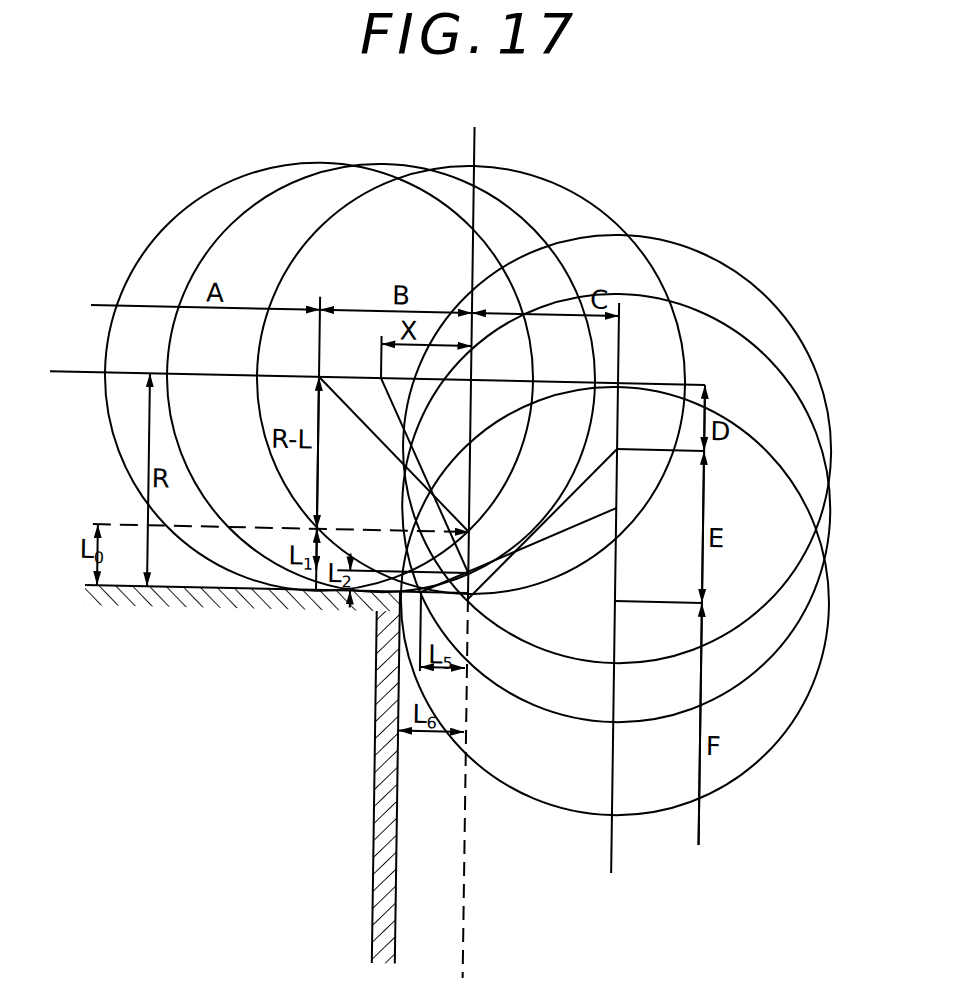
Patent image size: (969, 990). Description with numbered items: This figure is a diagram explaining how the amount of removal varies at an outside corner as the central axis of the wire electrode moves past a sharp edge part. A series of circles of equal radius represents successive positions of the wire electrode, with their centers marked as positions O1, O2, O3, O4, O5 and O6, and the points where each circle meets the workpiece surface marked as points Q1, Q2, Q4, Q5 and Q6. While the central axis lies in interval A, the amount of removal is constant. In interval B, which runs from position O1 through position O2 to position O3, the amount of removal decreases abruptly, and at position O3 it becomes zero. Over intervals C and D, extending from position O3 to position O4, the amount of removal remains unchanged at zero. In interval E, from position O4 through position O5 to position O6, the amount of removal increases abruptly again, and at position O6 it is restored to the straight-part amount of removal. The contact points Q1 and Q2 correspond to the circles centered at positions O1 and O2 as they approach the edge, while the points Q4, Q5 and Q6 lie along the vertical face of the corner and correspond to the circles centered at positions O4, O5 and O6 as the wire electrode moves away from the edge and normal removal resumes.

The wire electrode central axis position O1 is at (319, 376).
The wire electrode central axis position O2 is at (381, 378).
The wire electrode central axis position O3 is at (471, 379).
The wire electrode central axis position O4 is at (617, 449).
The wire electrode central axis position O5 is at (616, 508).
The wire electrode central axis position O6 is at (615, 601).
The contact point 1 Q1 is at (403, 455).
The contact point 2 Q2 is at (440, 476).
The contact point 4 Q4 is at (542, 559).
The contact point 5 Q5 is at (518, 570).
The contact point 6 Q6 is at (388, 616).